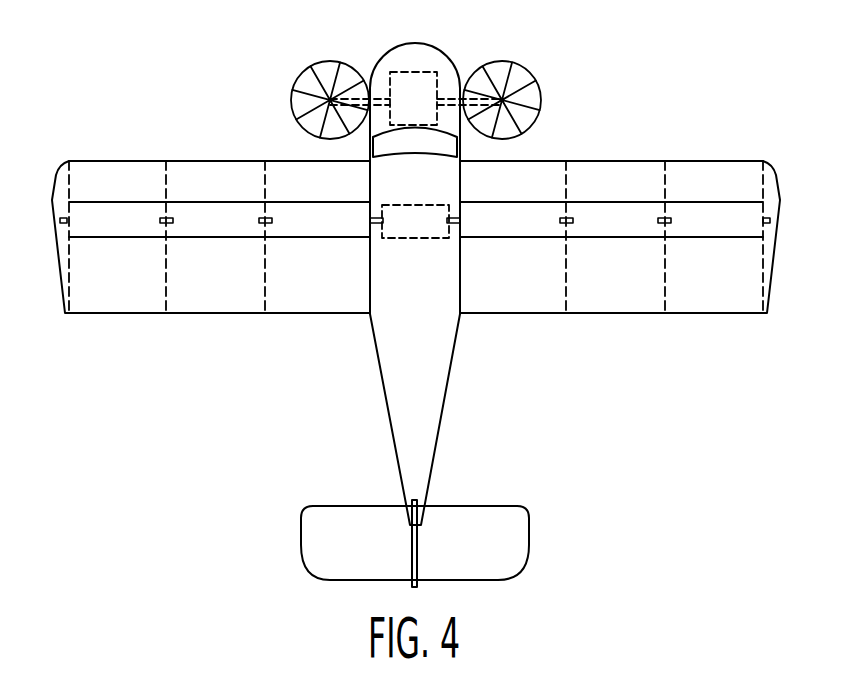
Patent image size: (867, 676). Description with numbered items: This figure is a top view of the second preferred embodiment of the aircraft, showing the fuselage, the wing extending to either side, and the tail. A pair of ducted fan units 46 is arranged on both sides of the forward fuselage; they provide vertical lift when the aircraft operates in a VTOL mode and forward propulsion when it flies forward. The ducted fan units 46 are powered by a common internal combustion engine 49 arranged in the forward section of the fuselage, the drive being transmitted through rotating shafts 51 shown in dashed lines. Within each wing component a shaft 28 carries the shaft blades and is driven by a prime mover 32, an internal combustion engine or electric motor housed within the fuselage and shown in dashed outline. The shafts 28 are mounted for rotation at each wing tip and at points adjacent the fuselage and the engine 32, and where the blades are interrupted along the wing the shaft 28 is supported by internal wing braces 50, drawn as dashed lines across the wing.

The shaft 28 is at (63, 218).
The prime mover 32 is at (416, 239).
The ducted fan units 46 is at (307, 67).
The internal combustion engine 49 is at (427, 80).
The internal wing braces 50 is at (260, 178).
The rotating shafts 51 is at (380, 100).